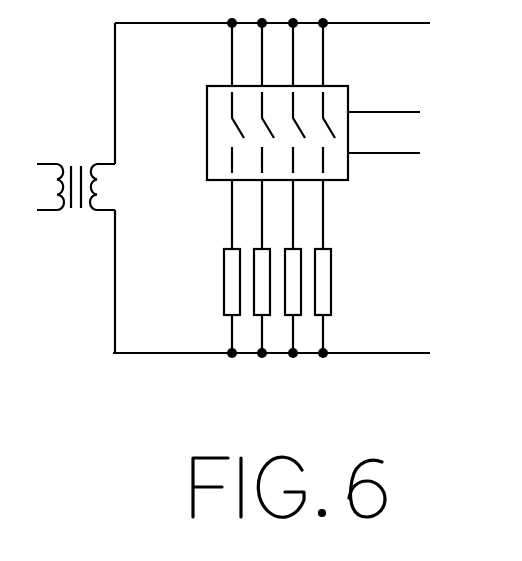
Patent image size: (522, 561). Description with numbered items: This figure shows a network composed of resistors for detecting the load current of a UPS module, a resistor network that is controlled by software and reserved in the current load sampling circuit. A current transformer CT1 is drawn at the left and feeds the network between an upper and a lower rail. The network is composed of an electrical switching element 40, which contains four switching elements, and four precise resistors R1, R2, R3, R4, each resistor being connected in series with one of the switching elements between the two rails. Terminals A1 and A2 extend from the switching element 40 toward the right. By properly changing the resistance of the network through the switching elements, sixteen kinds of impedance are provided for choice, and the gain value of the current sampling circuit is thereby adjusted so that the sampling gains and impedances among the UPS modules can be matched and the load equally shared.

The switch block 40 is at (345, 159).
The current transformer CT1 is at (95, 176).
The output terminal A1 is at (384, 99).
The output terminal A2 is at (384, 140).
The precise resistor R1 is at (218, 266).
The precise resistor R2 is at (253, 266).
The precise resistor R3 is at (284, 266).
The precise resistor R4 is at (336, 266).